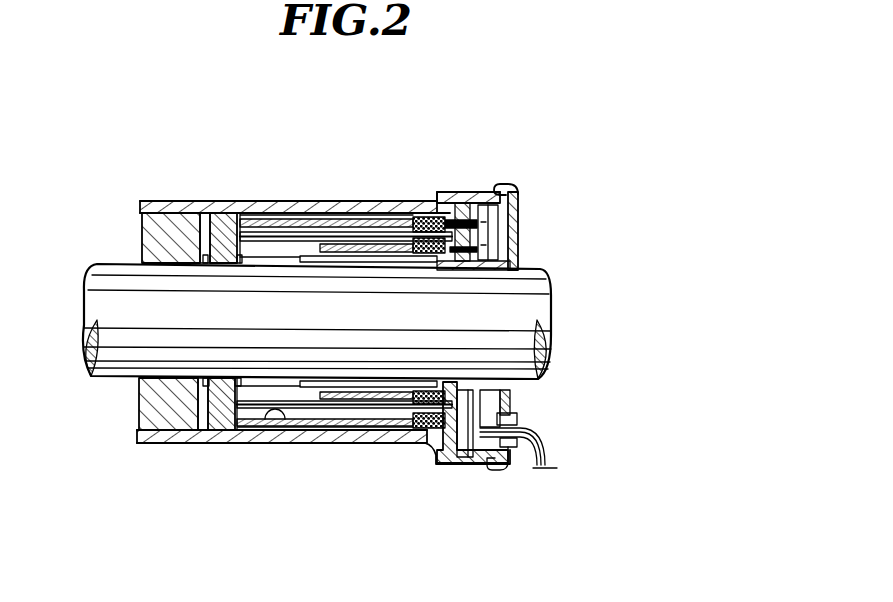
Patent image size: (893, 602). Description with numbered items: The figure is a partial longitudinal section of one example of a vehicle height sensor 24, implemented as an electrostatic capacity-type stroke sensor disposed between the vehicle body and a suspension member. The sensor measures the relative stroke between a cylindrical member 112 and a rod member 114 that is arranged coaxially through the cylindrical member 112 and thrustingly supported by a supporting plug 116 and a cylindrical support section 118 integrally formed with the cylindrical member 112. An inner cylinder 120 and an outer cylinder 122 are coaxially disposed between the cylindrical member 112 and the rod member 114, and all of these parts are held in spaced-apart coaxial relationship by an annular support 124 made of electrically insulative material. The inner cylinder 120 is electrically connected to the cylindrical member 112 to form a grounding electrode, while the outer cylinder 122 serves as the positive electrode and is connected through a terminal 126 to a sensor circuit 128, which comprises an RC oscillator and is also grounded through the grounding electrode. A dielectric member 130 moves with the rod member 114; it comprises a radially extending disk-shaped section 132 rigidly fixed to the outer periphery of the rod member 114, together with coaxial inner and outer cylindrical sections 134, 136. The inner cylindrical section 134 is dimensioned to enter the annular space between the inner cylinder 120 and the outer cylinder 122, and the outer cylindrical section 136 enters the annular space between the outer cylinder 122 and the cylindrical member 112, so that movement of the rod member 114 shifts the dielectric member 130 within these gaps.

The height sensor 24 is at (425, 143).
The cylindrical member 112 is at (284, 204).
The rod member 114 is at (534, 306).
The supporting plug 116 is at (138, 398).
The cylindrical support section 118 is at (516, 258).
The inner cylinder 120 is at (390, 248).
The outer cylinder 122 is at (360, 222).
The annular support 124 is at (420, 215).
The terminal 126 is at (468, 232).
The sensor circuit 128 is at (494, 224).
The dielectric member 130 is at (229, 457).
The disk-shaped section 132 is at (215, 211).
The inner cylindrical section 134 is at (302, 245).
The outer cylindrical section 136 is at (291, 422).